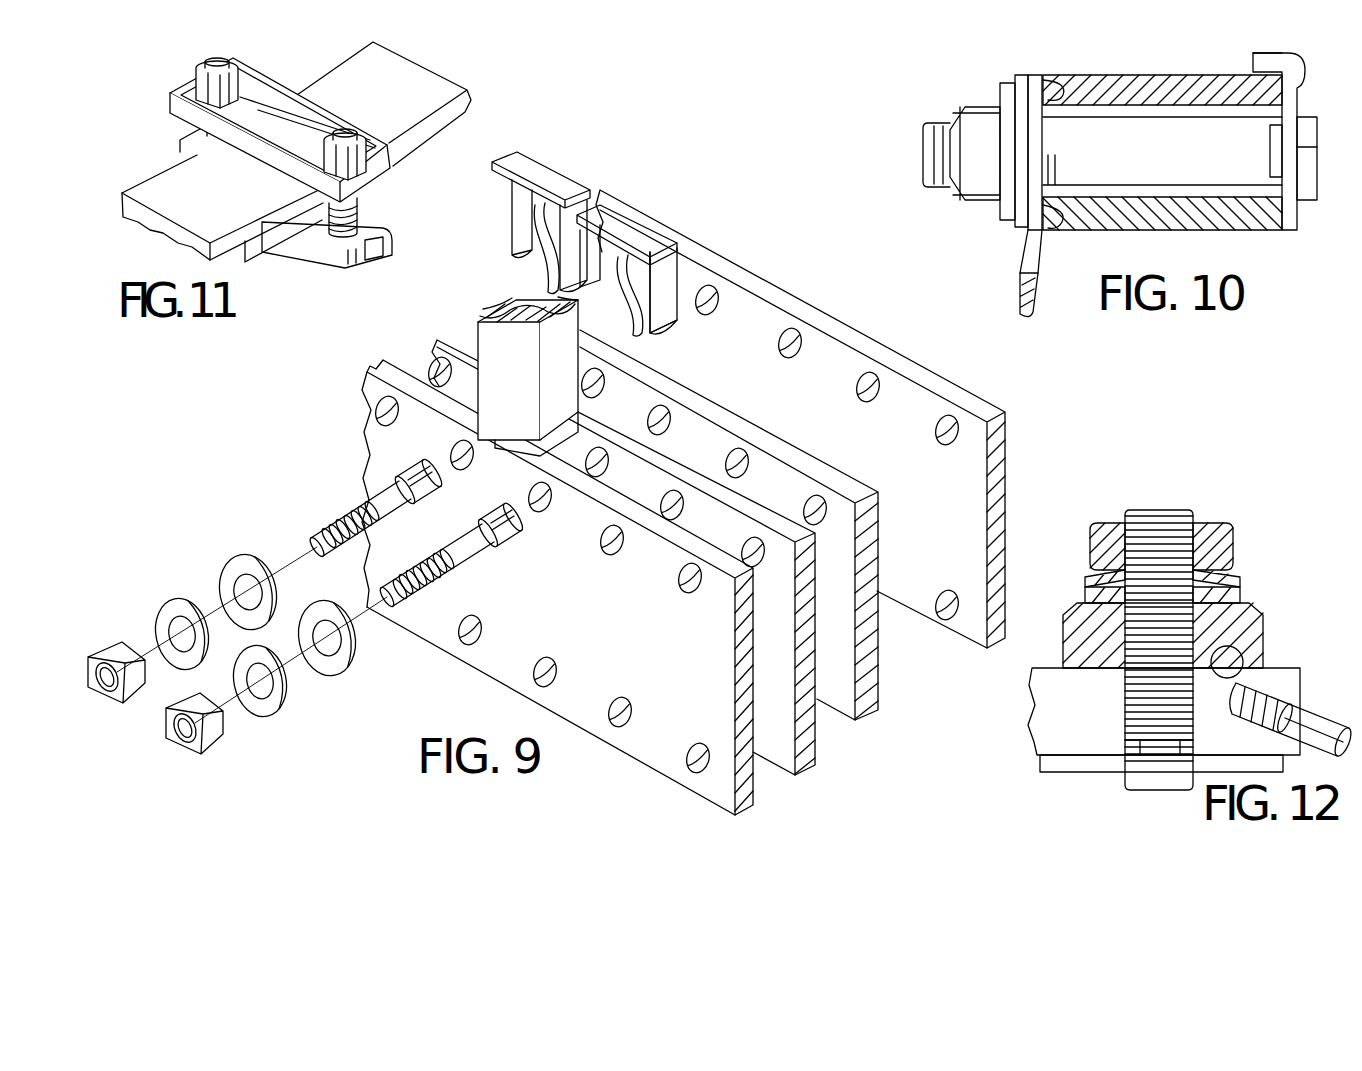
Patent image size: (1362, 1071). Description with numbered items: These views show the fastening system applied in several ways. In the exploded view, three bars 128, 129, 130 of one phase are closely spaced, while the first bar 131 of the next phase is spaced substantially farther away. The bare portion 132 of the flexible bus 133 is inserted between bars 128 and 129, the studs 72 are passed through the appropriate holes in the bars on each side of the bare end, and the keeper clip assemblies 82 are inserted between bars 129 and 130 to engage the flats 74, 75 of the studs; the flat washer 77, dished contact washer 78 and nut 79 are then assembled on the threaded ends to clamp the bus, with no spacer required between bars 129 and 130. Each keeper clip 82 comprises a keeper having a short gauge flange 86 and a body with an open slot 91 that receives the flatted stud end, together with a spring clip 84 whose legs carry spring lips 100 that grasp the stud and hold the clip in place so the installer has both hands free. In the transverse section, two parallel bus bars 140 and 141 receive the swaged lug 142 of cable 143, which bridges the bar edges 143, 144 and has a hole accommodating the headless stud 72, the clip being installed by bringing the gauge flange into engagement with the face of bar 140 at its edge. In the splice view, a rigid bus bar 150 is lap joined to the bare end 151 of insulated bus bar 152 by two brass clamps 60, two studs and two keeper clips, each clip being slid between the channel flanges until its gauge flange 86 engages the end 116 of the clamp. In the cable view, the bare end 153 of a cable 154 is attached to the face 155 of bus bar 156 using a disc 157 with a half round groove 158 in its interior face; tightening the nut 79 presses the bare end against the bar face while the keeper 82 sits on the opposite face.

In FIG. 11, the brass clamp 60 is at (297, 47).
In FIG. 11, the stud 72 is at (207, 58).
In FIG. 10, the stud 72 is at (1195, 137).
In FIG. 9, the stud 72 is at (347, 512).
In FIG. 12, the stud 72 is at (1133, 690).
In FIG. 10, the flat 74 is at (1277, 150).
In FIG. 9, the flat 74 is at (500, 550).
In FIG. 9, the flat 75 is at (403, 472).
In FIG. 11, the flat washer 77 is at (375, 198).
In FIG. 10, the flat washer 77 is at (1017, 253).
In FIG. 9, the flat washer 77 is at (237, 560).
In FIG. 12, the flat washer 77 is at (1243, 588).
In FIG. 11, the dished contact washer 78 is at (373, 193).
In FIG. 10, the dished contact washer 78 is at (1003, 227).
In FIG. 9, the dished contact washer 78 is at (167, 600).
In FIG. 12, the dished contact washer 78 is at (1237, 580).
In FIG. 11, the nut 79 is at (355, 133).
In FIG. 10, the nut 79 is at (970, 207).
In FIG. 9, the nut 79 is at (107, 642).
In FIG. 12, the nut 79 is at (1233, 527).
In FIG. 11, the keeper clip 82 is at (357, 263).
In FIG. 10, the keeper clip 82 is at (1308, 90).
In FIG. 9, the keeper clip 82 is at (556, 167).
In FIG. 12, the keeper clip 82 is at (1050, 765).
In FIG. 9, the spring clip 84 is at (673, 300).
In FIG. 11, the gauge flange 86 is at (367, 257).
In FIG. 10, the gauge flange 86 is at (1280, 63).
In FIG. 9, the open slot 91 is at (555, 240).
In FIG. 10, the spring lip 100 is at (1311, 200).
In FIG. 11, the end 116 is at (352, 262).
In FIG. 9, the bar 128 is at (718, 800).
In FIG. 9, the bar 129 is at (793, 775).
In FIG. 9, the bar 130 is at (850, 720).
In FIG. 9, the first bar of the next phase 131 is at (997, 468).
In FIG. 9, the bare portion 132 is at (517, 430).
In FIG. 9, the flexible bus 133 is at (492, 347).
In FIG. 10, the bus bar 140 is at (1110, 73).
In FIG. 10, the bus bar 141 is at (1235, 217).
In FIG. 10, the swaged lug 142 is at (1027, 77).
In FIG. 10, the cable 143 is at (1057, 90).
In FIG. 10, the bar edge 144 is at (1047, 210).
In FIG. 11, the rigid bus bar 150 is at (165, 182).
In FIG. 11, the bare end 151 is at (265, 238).
In FIG. 11, the insulated bus bar 152 is at (405, 68).
In FIG. 12, the bare end 153 is at (1260, 715).
In FIG. 12, the cable 154 is at (1313, 730).
In FIG. 12, the face 155 is at (1277, 663).
In FIG. 12, the bus bar 156 is at (1300, 690).
In FIG. 12, the disc 157 is at (1263, 645).
In FIG. 12, the groove 158 is at (1262, 630).